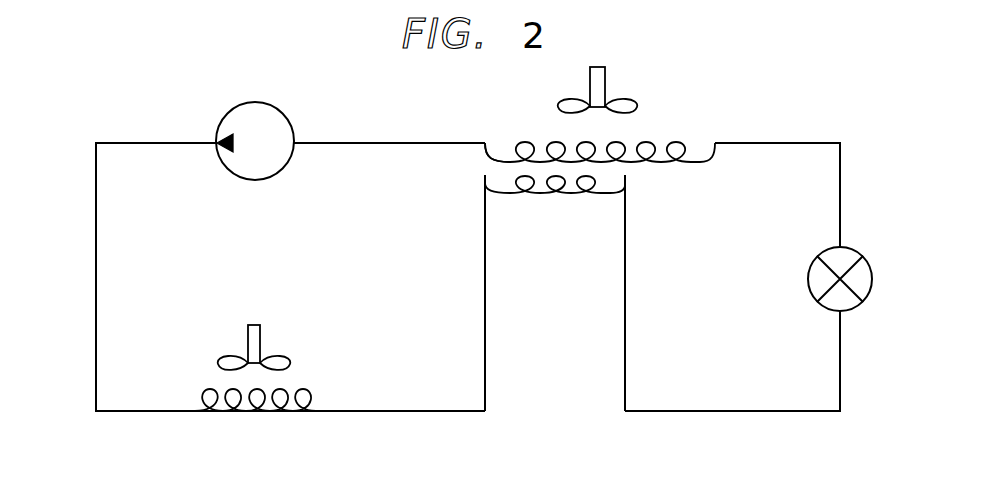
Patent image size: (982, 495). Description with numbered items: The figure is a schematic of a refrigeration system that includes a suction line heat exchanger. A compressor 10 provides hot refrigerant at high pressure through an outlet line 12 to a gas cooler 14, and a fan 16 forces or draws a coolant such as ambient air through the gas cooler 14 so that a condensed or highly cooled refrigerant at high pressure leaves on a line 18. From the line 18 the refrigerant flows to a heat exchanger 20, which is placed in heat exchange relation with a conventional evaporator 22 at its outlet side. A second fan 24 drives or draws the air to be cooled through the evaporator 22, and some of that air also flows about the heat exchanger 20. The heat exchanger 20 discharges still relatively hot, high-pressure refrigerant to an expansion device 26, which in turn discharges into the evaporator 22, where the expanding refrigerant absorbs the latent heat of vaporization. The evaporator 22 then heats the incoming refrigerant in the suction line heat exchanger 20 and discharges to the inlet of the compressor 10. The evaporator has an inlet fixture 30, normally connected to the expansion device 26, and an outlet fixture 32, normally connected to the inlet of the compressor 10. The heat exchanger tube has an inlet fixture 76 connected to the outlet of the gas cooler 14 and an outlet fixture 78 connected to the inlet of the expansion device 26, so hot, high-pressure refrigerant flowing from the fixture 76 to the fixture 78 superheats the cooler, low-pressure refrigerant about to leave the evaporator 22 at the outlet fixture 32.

The compressor 10 is at (276, 106).
The outlet line 12 is at (96, 330).
The gas cooler 14 is at (282, 411).
The fan 16 is at (261, 345).
The line 18 is at (440, 411).
The heat exchanger 20 is at (558, 193).
The evaporator 22 is at (558, 142).
The fan 24 is at (606, 82).
The expansion device 26 is at (808, 282).
The inlet fixture 30 is at (715, 143).
The outlet fixture 32 is at (490, 140).
The inlet fixture 76 is at (485, 177).
The outlet fixture 78 is at (625, 175).